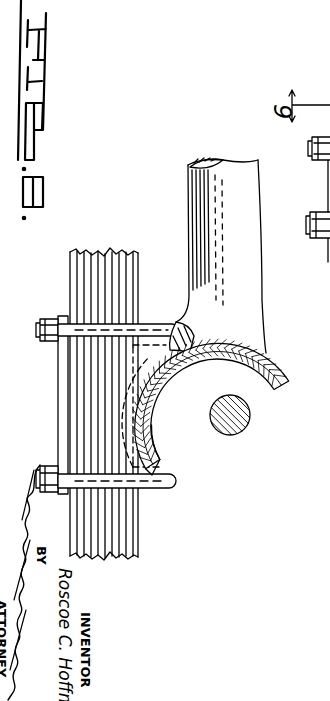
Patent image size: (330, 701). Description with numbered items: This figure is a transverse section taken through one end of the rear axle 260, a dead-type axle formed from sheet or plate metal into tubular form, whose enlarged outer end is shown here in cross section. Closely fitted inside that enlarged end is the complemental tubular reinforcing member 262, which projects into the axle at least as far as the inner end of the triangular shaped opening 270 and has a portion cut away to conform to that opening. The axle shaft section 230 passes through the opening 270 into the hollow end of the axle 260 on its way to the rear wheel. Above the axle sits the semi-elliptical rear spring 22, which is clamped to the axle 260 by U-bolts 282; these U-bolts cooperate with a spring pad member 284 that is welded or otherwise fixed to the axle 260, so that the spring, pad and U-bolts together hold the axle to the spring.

The spring 22 is at (110, 248).
The U-bolt 282 is at (90, 332).
The spring pad member 284 is at (157, 313).
The rear axle 260 is at (221, 255).
The triangular shaped opening 270 is at (263, 378).
The tubular reinforcing member 262 is at (163, 433).
The axle shaft 230 is at (235, 438).